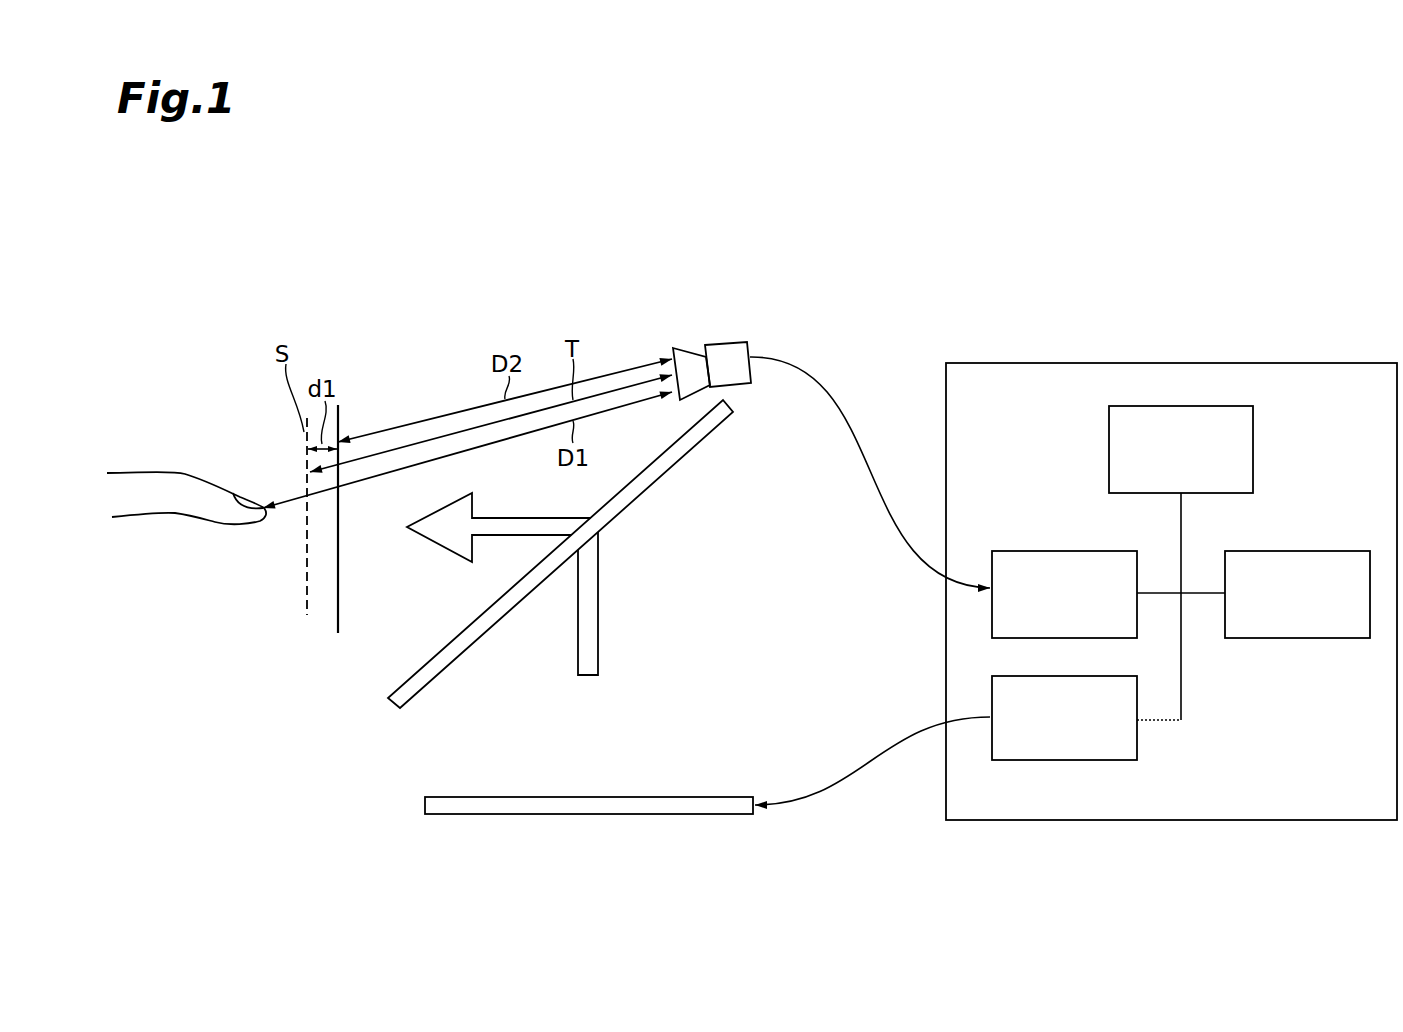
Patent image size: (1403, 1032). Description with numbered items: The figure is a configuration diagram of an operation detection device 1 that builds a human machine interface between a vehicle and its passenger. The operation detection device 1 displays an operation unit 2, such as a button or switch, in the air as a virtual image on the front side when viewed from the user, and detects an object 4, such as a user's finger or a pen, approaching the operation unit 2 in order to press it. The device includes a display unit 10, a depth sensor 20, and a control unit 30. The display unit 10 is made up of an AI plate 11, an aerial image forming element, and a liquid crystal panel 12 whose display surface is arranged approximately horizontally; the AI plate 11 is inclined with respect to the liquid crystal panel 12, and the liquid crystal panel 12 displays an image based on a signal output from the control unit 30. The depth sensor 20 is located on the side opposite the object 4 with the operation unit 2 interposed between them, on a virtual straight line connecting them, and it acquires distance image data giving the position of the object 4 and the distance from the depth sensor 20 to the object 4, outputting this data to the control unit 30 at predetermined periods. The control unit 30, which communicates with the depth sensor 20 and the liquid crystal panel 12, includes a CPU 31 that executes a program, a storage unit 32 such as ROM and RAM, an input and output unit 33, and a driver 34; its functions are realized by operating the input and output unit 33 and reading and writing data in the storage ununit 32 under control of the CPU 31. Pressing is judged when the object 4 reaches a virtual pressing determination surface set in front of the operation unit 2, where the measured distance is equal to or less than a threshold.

The operation detection device 1 is at (1333, 226).
The operation unit 2 is at (364, 477).
The object 4 is at (220, 486).
The display unit 10 is at (579, 633).
The AI plate 11 is at (698, 447).
The liquid crystal panel 12 is at (668, 815).
The depth sensor 20 is at (722, 342).
The control unit 30 is at (1104, 363).
The CPU 31 is at (1253, 448).
The storage unit 32 is at (1330, 551).
The input and output unit 33 is at (1068, 551).
The driver 34 is at (1067, 762).